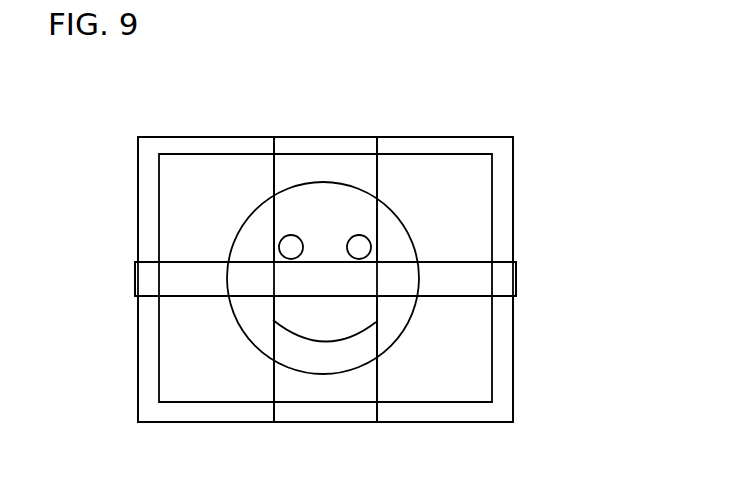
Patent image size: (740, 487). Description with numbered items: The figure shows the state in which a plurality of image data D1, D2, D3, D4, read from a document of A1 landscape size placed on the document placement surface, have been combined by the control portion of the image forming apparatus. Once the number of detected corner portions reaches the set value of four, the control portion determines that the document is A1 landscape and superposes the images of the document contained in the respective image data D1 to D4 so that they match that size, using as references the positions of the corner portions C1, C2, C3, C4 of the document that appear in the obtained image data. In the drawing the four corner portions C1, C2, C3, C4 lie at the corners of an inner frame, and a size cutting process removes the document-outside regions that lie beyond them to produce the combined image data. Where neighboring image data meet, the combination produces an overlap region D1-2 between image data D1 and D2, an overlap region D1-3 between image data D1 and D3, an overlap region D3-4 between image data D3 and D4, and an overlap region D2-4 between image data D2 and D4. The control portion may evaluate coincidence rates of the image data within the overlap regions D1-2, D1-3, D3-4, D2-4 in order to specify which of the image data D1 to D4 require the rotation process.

The image data D1 is at (210, 137).
The overlap region D1-2 is at (320, 136).
The image data D2 is at (440, 137).
The overlap region D1-3 is at (133, 272).
The overlap region D2-4 is at (518, 272).
The image data D3 is at (210, 422).
The overlap region D3-4 is at (322, 424).
The image data D4 is at (443, 422).
The corner portion C1 is at (156, 145).
The corner portion C2 is at (496, 151).
The corner portion C3 is at (156, 405).
The corner portion C4 is at (496, 409).